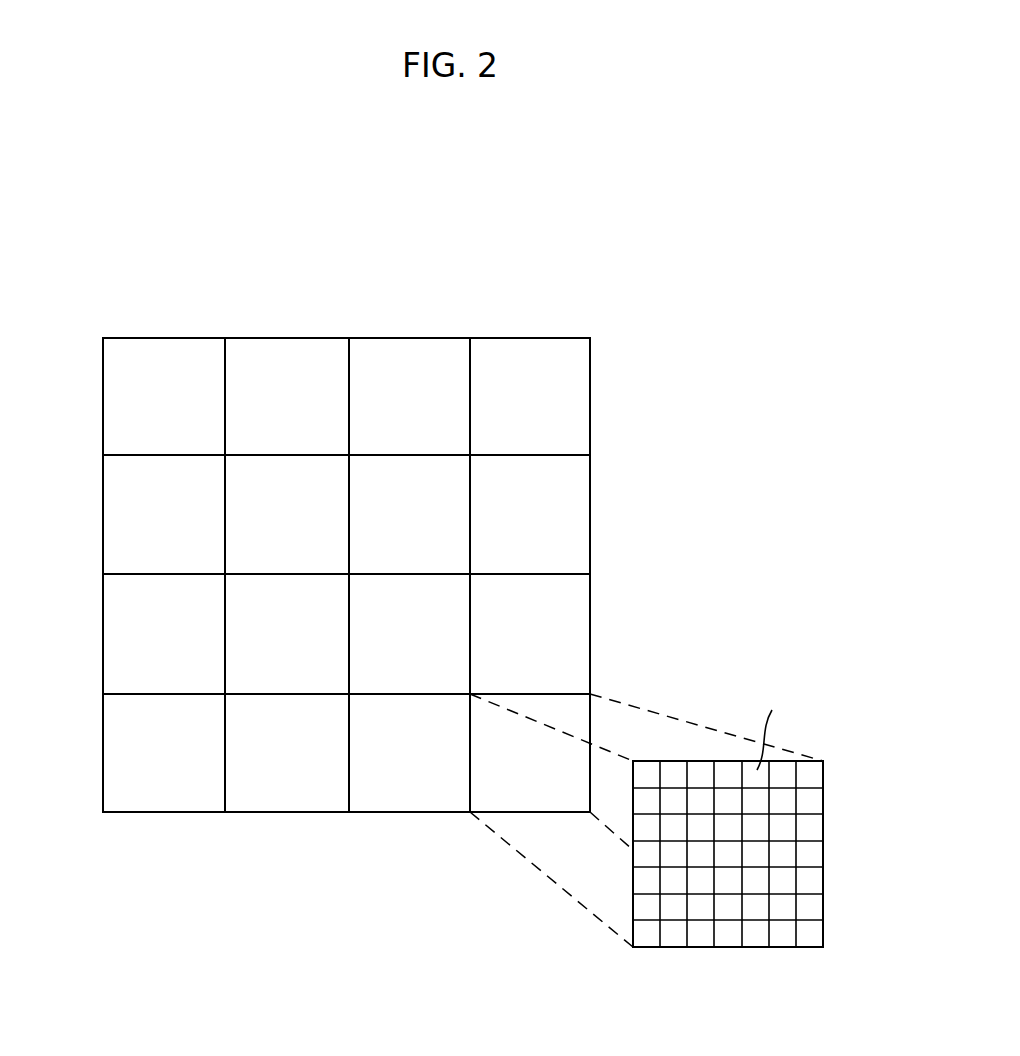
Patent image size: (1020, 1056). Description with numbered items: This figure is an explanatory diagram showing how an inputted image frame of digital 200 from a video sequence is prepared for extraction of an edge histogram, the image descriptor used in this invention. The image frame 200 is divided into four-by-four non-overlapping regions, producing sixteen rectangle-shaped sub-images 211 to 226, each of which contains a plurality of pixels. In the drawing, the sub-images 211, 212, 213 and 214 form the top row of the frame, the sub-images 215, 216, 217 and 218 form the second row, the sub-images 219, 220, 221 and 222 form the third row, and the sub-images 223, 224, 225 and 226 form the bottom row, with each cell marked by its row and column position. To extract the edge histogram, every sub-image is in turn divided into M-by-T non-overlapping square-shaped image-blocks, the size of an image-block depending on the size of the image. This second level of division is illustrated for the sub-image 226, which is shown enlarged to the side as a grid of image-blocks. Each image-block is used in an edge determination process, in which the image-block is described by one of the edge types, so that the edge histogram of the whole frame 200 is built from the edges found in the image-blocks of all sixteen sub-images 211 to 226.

The inputted image frame 200 is at (628, 323).
The sub-image 211 is at (157, 347).
The sub-image 212 is at (278, 347).
The sub-image 213 is at (402, 345).
The sub-image 214 is at (522, 345).
The sub-image 215 is at (115, 483).
The sub-image 216 is at (247, 540).
The sub-image 217 is at (450, 538).
The sub-image 218 is at (577, 480).
The sub-image 219 is at (115, 603).
The sub-image 220 is at (247, 660).
The sub-image 221 is at (450, 658).
The sub-image 222 is at (577, 597).
The sub-image 223 is at (160, 805).
The sub-image 224 is at (282, 805).
The sub-image 225 is at (405, 805).
The sub-image 226 is at (523, 805).